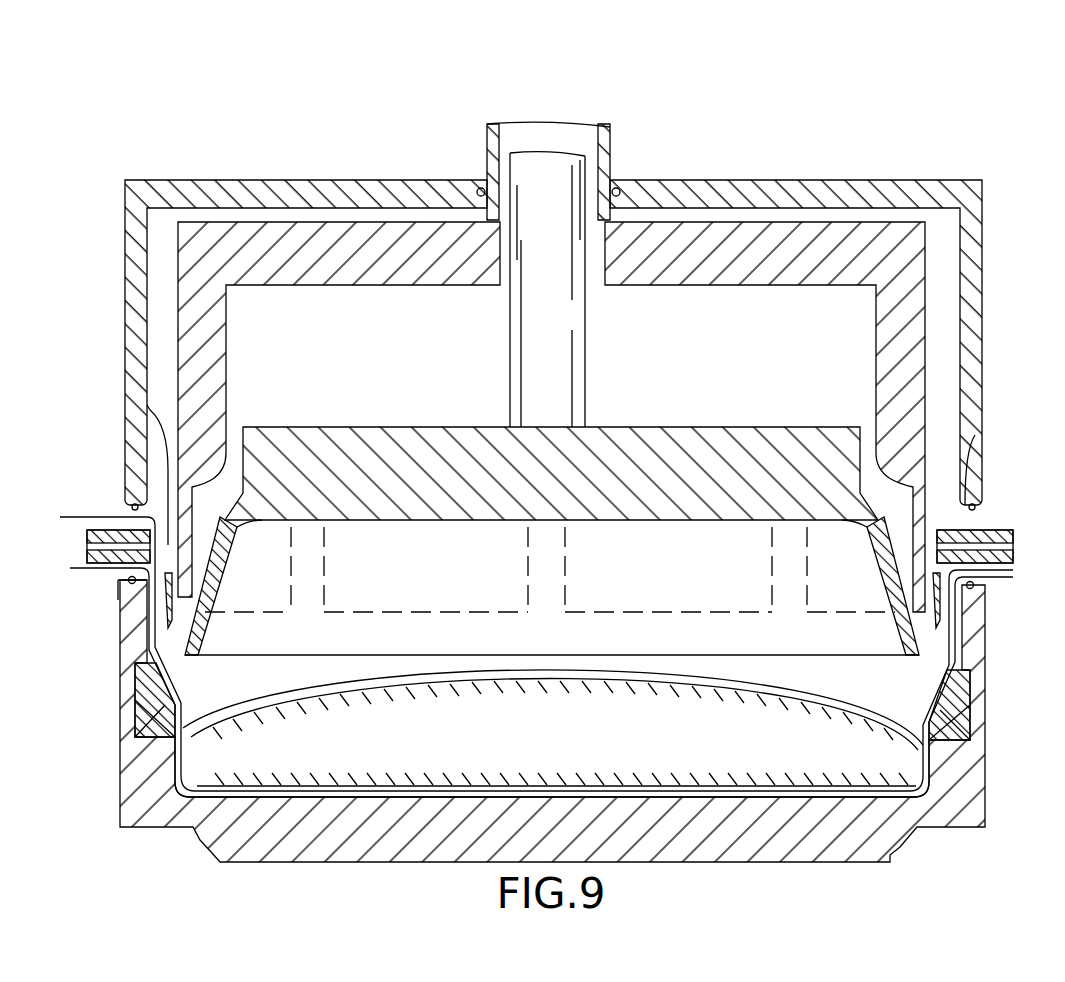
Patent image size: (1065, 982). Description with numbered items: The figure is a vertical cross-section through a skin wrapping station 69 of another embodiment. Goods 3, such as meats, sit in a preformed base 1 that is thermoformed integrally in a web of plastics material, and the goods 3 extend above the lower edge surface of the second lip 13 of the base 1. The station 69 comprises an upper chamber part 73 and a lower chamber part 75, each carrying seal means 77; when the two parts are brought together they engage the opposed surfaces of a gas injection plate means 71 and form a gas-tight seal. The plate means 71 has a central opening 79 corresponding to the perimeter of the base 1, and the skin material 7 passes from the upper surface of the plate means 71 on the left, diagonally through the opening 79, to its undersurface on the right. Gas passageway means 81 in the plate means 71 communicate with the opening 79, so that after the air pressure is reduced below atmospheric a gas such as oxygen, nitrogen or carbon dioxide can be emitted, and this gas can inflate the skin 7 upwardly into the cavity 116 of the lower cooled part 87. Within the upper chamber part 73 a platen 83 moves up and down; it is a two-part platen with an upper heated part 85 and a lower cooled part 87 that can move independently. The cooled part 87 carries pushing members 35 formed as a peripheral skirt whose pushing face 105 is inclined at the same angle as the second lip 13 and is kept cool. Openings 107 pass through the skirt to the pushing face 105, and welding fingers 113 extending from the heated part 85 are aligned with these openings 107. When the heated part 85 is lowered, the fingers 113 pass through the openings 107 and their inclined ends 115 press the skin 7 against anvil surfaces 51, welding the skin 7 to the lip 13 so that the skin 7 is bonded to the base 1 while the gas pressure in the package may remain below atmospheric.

The preformed base 1 is at (370, 795).
The goods 3 is at (551, 740).
The skin material 7 is at (78, 515).
The second lip 13 is at (140, 690).
The pushing members 35 is at (198, 628).
The anvil surfaces 51 is at (138, 732).
The skin wrapping station 69 is at (120, 270).
The gas injection plate means 71 is at (118, 537).
The upper chamber part 73 is at (982, 352).
The lower chamber part 75 is at (168, 820).
The seal means 77 is at (152, 435).
The central opening 79 is at (150, 410).
The gas passageway means 81 is at (110, 568).
The platen 83 is at (430, 445).
The upper heated part 85 is at (718, 255).
The lower cooled part 87 is at (698, 444).
The pushing face 105 is at (172, 662).
The openings 107 is at (168, 633).
The welding fingers 113 is at (918, 532).
The ends 115 is at (205, 600).
The cavity 116 is at (372, 550).